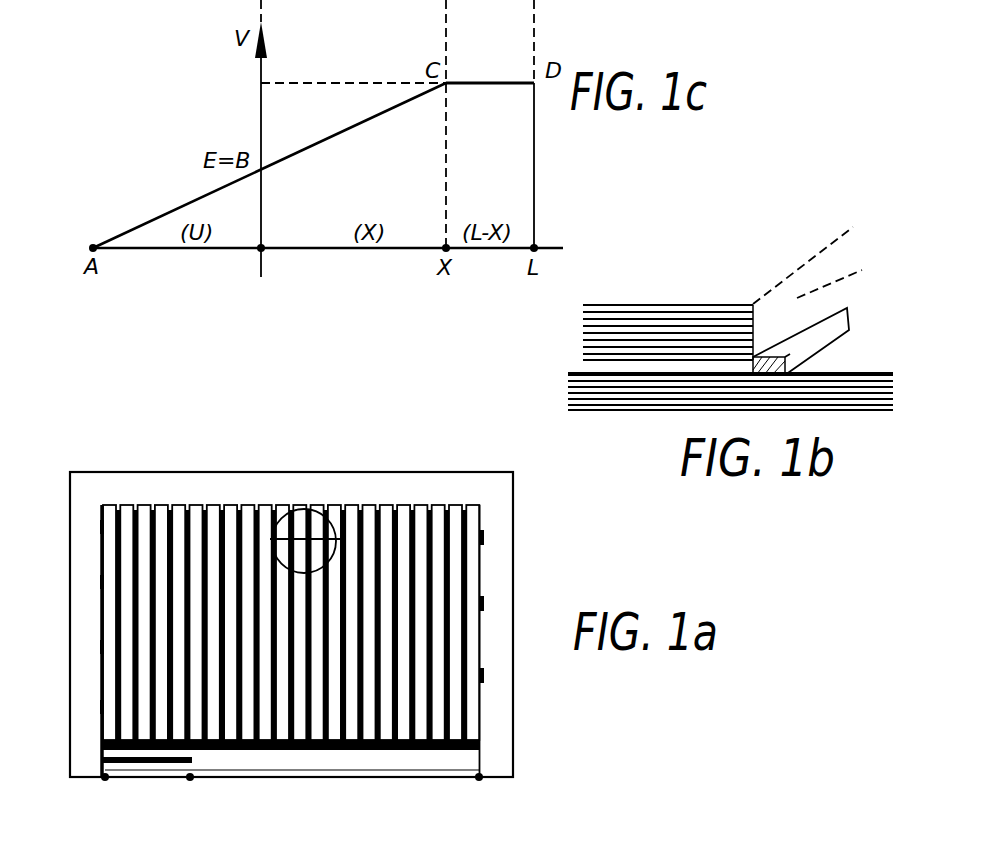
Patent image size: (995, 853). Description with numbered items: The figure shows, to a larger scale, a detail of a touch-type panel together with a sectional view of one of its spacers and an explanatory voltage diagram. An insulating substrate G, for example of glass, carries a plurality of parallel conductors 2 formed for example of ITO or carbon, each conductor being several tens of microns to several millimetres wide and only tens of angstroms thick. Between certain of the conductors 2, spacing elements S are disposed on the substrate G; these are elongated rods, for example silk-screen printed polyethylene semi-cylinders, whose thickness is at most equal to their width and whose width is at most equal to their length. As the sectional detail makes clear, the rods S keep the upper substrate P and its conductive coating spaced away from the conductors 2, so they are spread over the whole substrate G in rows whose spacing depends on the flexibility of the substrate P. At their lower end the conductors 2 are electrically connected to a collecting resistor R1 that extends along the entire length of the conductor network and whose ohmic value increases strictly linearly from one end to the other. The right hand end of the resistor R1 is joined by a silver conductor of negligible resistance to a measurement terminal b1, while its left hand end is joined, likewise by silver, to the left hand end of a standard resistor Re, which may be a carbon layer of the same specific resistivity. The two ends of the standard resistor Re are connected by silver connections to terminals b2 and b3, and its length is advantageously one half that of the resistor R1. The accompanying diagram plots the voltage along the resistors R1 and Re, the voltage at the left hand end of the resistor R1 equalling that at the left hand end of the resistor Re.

In FIG. 1a, the parallel conductors 2 is at (346, 514).
In FIG. 1b, the spacing elements S is at (795, 338).
In FIG. 1a, the spacing elements S is at (460, 571).
In FIG. 1b, the substrate P is at (656, 332).
In FIG. 1b, the insulating substrate G is at (719, 392).
In FIG. 1a, the insulating substrate G is at (498, 693).
In FIG. 1a, the measurement terminal b1 is at (479, 780).
In FIG. 1a, the terminal b2 is at (105, 780).
In FIG. 1a, the terminal b3 is at (190, 780).
In FIG. 1a, the standard resistor Re is at (167, 765).
In FIG. 1a, the collecting resistor R1 is at (402, 751).